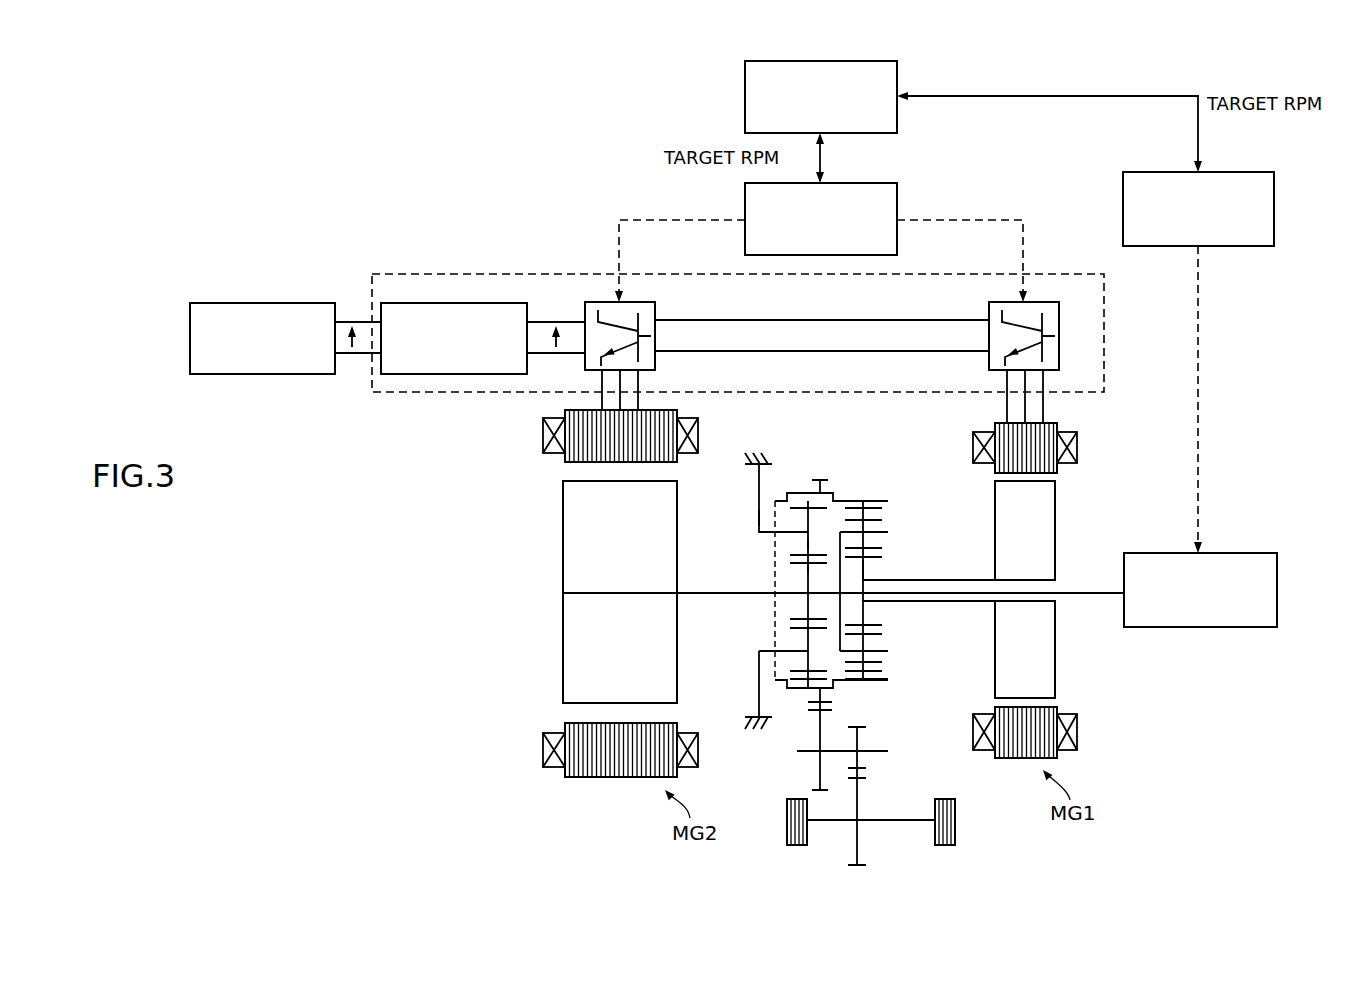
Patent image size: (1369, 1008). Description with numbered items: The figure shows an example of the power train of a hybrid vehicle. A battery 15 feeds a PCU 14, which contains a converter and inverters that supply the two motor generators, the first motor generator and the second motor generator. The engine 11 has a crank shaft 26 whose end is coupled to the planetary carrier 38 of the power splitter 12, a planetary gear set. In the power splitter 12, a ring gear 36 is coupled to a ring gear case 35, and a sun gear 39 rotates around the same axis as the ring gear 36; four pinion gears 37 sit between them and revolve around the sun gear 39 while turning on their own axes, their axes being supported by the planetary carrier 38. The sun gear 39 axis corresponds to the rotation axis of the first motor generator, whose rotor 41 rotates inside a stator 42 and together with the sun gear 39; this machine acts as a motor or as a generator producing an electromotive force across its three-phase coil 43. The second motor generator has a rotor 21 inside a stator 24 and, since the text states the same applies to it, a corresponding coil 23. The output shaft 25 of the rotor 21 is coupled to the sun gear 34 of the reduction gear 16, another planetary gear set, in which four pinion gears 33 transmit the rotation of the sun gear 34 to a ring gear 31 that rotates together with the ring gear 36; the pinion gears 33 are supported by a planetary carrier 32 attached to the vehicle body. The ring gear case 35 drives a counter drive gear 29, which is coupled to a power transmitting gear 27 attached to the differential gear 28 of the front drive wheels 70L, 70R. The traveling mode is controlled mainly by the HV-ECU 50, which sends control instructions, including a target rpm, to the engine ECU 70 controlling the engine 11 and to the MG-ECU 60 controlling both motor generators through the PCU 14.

The engine 11 is at (1278, 588).
The power splitter 12 is at (893, 466).
The PCU (Power Control Unit) 14 is at (430, 274).
The battery 15 is at (262, 376).
The reduction gear 16 is at (832, 466).
The rotor 21 is at (563, 523).
The MG2 stator 23 is at (622, 778).
The stator 24 is at (709, 766).
The MG2 rotor shaft 25 is at (713, 596).
The crank shaft 26 is at (1088, 596).
The power transmitting gear 27 is at (803, 762).
The differential gear 28 is at (870, 800).
The counter drive gear 29 is at (826, 696).
The ring gear 31 is at (787, 495).
The planetary carrier 32 is at (759, 518).
The pinion gears 33 is at (808, 545).
The sun gear 34 is at (808, 568).
The ring gear case 35 is at (852, 500).
The ring gear 36 is at (863, 510).
The pinion gears 37 is at (848, 534).
The planetary carrier 38 is at (865, 548).
The sun gear 39 is at (865, 567).
The rotor 41 is at (1057, 510).
The stator 42 is at (1084, 744).
The three-phase coil 43 is at (1027, 760).
The HV-ECU 50 is at (745, 86).
The MG-ECU 60 is at (745, 205).
The engine ECU 70 is at (1275, 210).
The left drive wheel 70L is at (788, 846).
The right drive wheel 70R is at (945, 847).